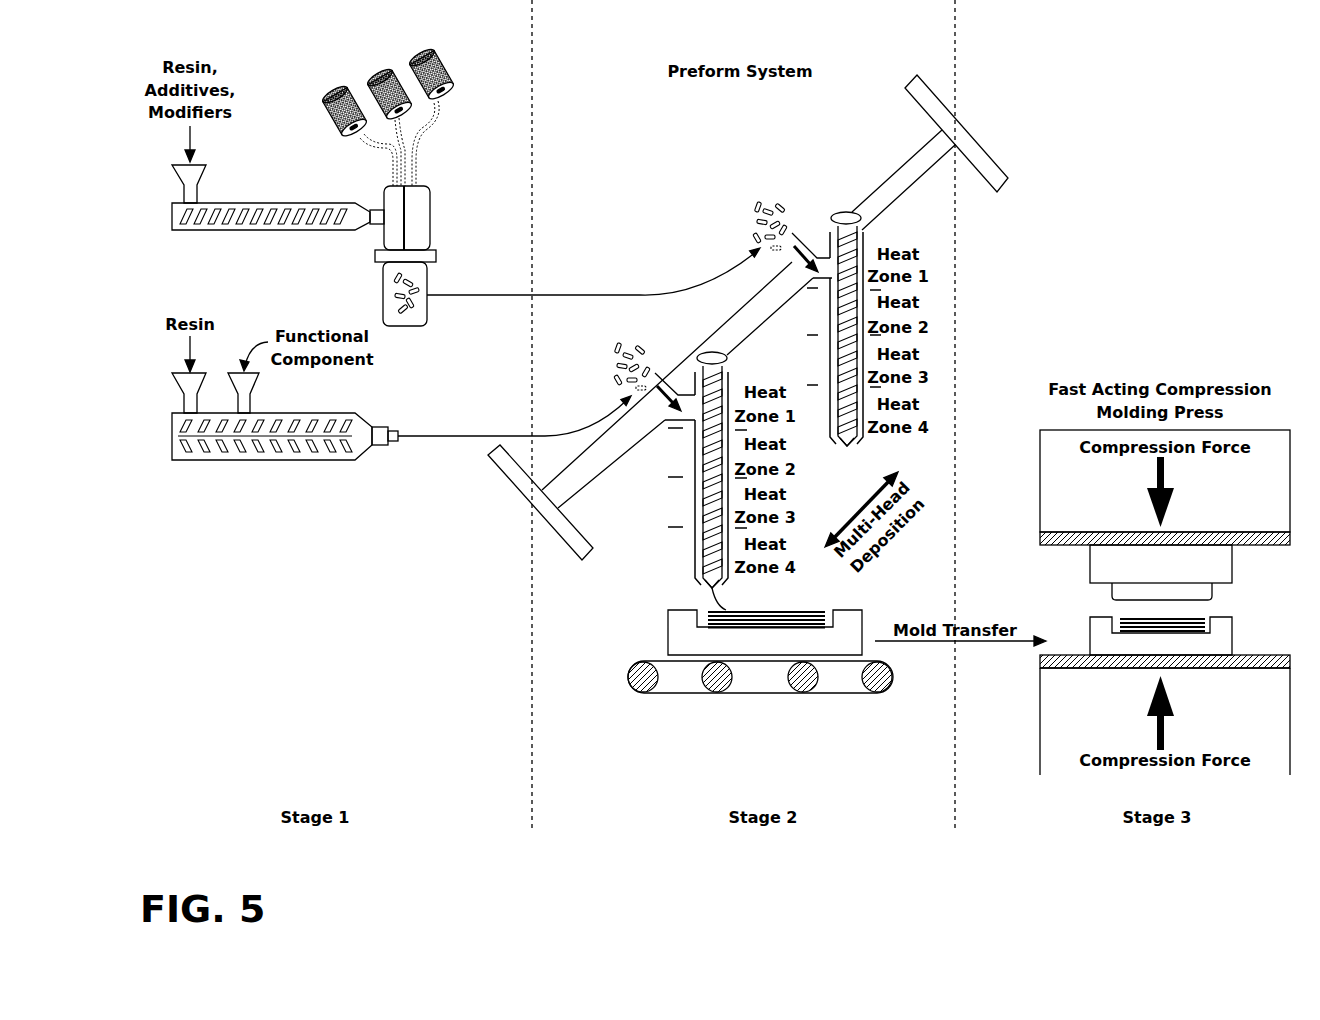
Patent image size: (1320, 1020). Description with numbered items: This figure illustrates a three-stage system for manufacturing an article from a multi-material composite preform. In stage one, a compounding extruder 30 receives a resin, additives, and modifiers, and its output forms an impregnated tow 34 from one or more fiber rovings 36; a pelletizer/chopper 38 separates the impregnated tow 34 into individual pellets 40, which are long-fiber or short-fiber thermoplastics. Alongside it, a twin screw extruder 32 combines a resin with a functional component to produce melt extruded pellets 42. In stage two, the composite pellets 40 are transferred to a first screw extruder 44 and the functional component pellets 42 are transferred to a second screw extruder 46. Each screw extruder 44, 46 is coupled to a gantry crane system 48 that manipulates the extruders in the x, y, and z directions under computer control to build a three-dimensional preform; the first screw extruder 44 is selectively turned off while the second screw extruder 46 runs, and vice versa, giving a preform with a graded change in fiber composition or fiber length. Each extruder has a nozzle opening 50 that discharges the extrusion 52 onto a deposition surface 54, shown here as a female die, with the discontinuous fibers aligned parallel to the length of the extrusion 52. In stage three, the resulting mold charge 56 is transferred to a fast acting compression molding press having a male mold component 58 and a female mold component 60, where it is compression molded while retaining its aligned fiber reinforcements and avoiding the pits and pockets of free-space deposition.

The compounding extruder 30 is at (291, 231).
The twin screw extruder 32 is at (332, 461).
The impregnated tow 34 is at (430, 224).
The fiber rovings 36 is at (460, 40).
The pelletizer/chopper 38 is at (436, 258).
The pellets 40 is at (750, 195).
The melt extruded pellets 42 is at (615, 333).
The first screw extruder 44 is at (808, 368).
The second screw extruder 46 is at (676, 508).
The gantry crane system 48 is at (1007, 162).
The nozzle opening 50 is at (838, 442).
The extrusion 52 is at (710, 583).
The deposition surface 54 is at (698, 625).
The mold charge 56 is at (1190, 614).
The male mold component 58 is at (1235, 559).
The female mold component 60 is at (1233, 627).